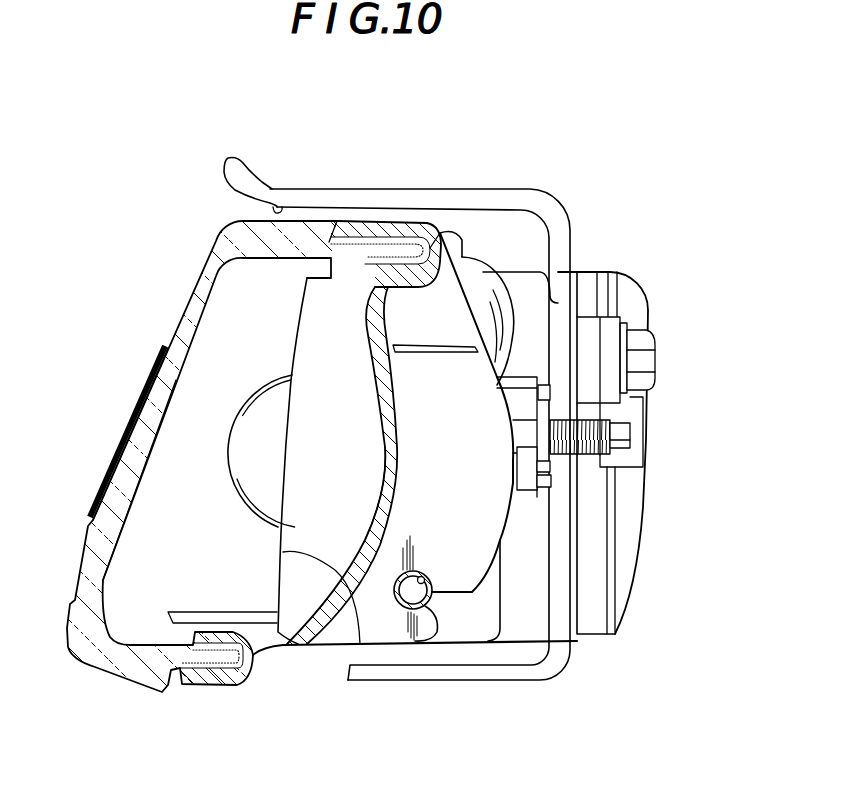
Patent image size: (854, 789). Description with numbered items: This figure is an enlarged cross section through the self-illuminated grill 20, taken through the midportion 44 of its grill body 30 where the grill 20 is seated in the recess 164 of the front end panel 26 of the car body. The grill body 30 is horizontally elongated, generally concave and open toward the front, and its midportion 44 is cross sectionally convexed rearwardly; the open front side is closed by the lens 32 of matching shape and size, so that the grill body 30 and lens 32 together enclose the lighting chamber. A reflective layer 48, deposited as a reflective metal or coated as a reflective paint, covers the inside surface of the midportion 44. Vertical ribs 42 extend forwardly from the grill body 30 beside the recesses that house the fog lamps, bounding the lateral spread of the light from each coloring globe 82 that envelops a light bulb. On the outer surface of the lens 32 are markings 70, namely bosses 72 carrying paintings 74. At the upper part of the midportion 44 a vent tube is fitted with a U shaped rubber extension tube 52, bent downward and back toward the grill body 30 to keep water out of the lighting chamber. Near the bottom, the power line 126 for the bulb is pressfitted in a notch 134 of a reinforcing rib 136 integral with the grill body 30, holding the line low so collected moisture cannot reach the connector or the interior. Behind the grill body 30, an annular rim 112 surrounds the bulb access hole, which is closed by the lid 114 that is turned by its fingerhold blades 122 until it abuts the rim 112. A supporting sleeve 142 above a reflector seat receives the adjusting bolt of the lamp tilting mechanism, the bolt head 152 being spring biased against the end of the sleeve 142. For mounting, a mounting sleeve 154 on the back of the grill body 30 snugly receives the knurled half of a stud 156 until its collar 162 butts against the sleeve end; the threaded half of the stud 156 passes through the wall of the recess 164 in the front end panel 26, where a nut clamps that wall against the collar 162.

The self-illuminated grill 20 is at (125, 212).
The front end panel 26 is at (224, 174).
The recess 164 is at (284, 205).
The lens 32 is at (195, 290).
The paintings 74 is at (147, 353).
The bosses 72 is at (147, 393).
The markings 70 is at (122, 432).
The vertical ribs 42 is at (306, 314).
The coloring globe 82 is at (247, 420).
The reflective layer 48 is at (284, 561).
The midportion 44 is at (403, 417).
The grill body 30 is at (399, 462).
The extension tube 52 is at (470, 272).
The notch 134 is at (425, 574).
The power line 126 is at (436, 608).
The reinforcing rib 136 is at (473, 583).
The annular rim 112 is at (593, 633).
The lid 114 is at (617, 500).
The supporting sleeve 142 is at (599, 315).
The fingerhold blades 122 is at (642, 455).
The head 152 is at (657, 340).
The mounting sleeve 154 is at (545, 465).
The collar 162 is at (527, 490).
The stud 156 is at (627, 431).